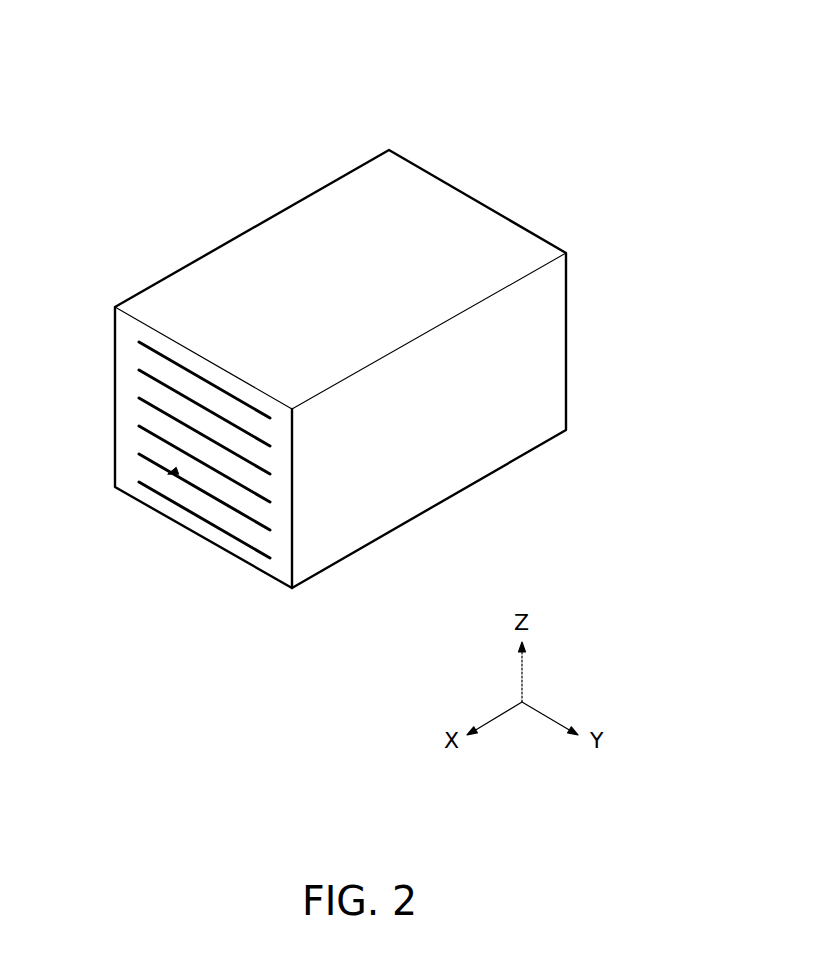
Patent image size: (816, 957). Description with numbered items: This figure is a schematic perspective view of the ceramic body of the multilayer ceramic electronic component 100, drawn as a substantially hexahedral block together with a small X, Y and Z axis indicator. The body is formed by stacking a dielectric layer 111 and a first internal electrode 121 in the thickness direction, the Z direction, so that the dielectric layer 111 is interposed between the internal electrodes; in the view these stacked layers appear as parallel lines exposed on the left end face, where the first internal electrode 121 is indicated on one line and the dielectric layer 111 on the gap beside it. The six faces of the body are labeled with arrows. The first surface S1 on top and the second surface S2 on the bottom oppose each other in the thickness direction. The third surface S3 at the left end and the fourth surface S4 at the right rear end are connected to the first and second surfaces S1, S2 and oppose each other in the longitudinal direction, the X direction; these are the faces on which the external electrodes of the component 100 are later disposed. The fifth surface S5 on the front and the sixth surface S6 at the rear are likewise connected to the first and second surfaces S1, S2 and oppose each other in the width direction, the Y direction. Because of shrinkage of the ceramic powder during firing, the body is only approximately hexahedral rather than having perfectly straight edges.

The multilayer ceramic electronic component 100 is at (138, 45).
The dielectric layer 111 is at (139, 386).
The first internal electrode 121 is at (139, 342).
The first surface S1 is at (342, 213).
The second surface S2 is at (348, 528).
The third surface S3 is at (203, 503).
The fourth surface S4 is at (458, 228).
The fifth surface S5 is at (537, 357).
The sixth surface S6 is at (190, 302).